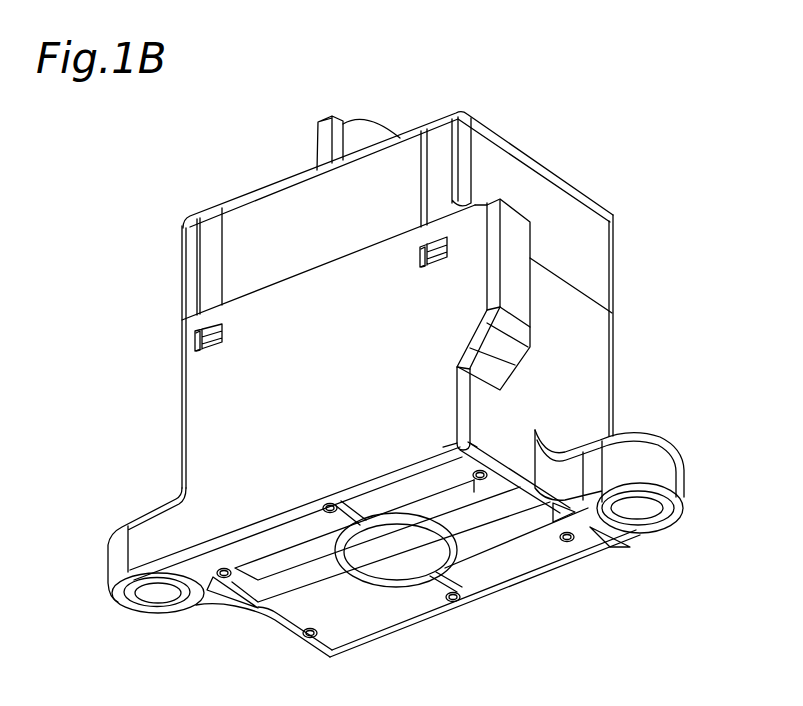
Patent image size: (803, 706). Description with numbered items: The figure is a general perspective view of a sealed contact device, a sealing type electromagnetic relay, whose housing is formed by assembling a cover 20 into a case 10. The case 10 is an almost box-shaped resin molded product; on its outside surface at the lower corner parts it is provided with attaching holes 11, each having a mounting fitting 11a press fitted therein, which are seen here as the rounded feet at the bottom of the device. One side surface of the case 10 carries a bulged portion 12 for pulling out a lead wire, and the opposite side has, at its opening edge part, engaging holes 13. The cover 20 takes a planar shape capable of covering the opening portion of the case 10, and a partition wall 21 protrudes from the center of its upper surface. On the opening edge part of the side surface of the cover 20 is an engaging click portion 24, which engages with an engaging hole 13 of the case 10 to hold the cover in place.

The case 10 is at (582, 348).
The attaching hole 11 is at (162, 598).
The mounting fitting 11a is at (641, 519).
The bulged portion 12 is at (517, 243).
The engaging hole 13 is at (208, 352).
The cover 20 is at (557, 190).
The partition wall 21 is at (345, 119).
The engaging click portion 24 is at (220, 339).